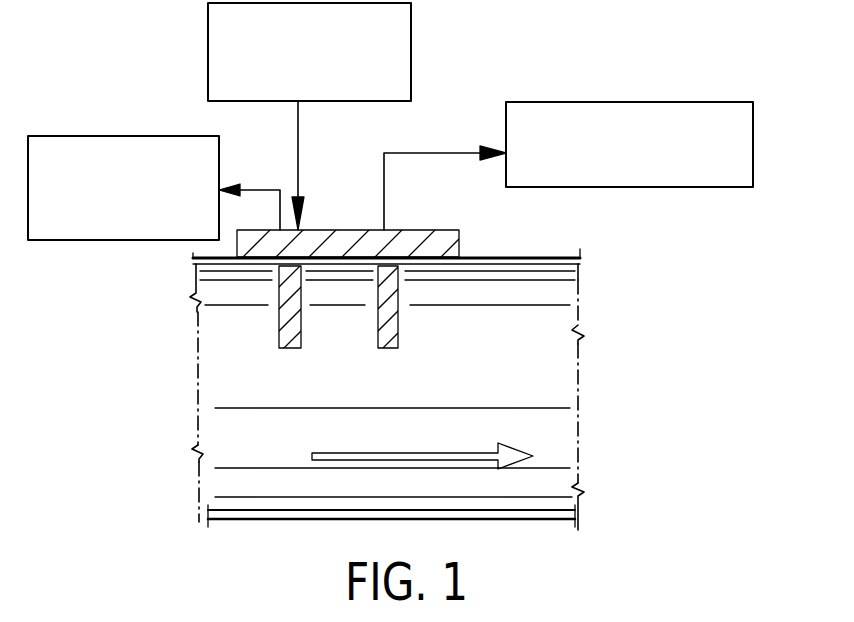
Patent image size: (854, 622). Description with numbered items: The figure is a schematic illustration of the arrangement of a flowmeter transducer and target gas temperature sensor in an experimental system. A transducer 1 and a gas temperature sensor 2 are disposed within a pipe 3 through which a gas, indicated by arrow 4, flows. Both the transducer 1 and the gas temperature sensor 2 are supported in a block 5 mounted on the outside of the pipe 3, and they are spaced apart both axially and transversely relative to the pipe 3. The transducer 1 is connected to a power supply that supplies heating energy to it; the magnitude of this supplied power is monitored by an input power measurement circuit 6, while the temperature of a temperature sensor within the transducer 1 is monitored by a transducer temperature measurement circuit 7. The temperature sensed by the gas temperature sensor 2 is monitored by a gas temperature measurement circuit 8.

The transducer 1 is at (290, 335).
The gas temperature sensor 2 is at (392, 334).
The pipe 3 is at (305, 520).
The arrow 4 is at (475, 452).
The block 5 is at (445, 230).
The input power measurement circuit 6 is at (221, 57).
The transducer temperature measurement circuit 7 is at (96, 138).
The gas temperature measurement circuit 8 is at (686, 107).